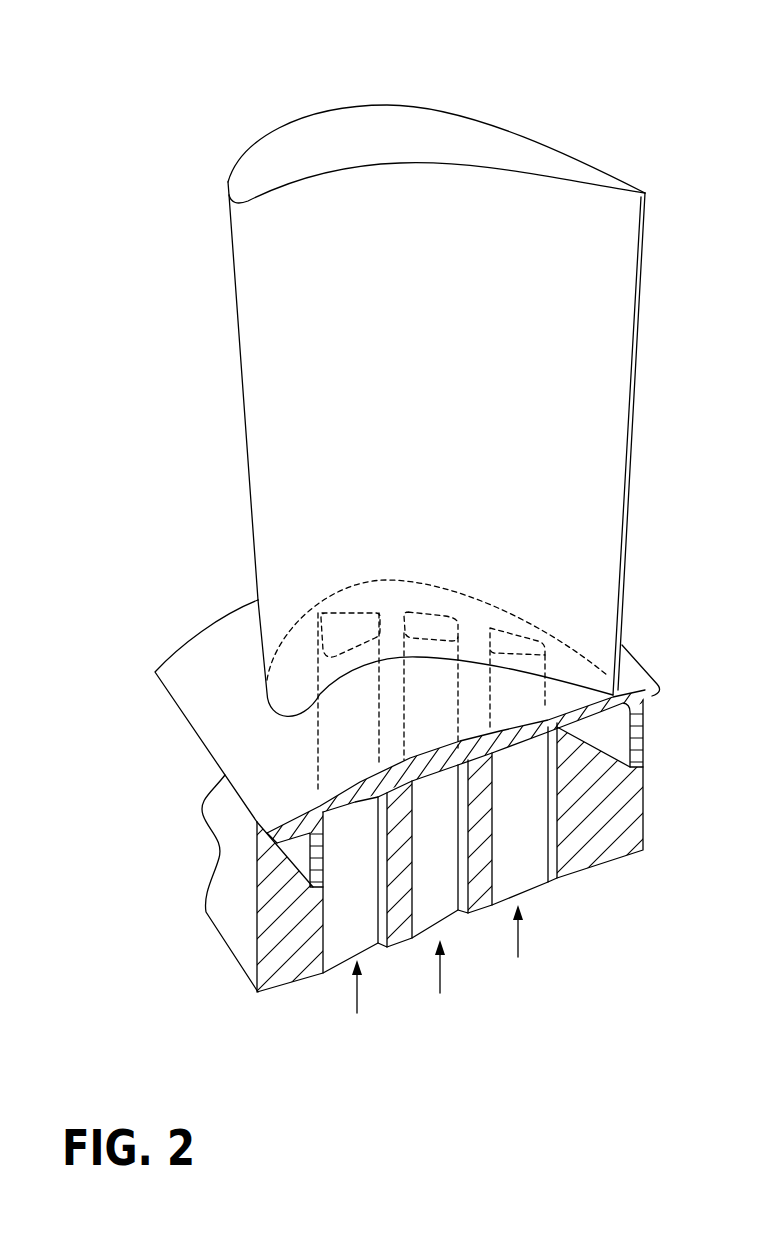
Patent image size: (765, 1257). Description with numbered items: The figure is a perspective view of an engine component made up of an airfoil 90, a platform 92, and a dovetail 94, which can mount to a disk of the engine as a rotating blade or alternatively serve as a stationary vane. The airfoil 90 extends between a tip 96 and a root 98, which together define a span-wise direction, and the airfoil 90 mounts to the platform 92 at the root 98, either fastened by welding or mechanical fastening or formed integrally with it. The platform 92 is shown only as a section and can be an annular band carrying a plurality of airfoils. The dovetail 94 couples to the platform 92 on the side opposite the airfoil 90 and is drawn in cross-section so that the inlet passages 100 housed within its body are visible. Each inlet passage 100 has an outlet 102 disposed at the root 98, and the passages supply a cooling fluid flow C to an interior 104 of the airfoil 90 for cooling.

The airfoil 90 is at (236, 486).
The platform 92 is at (213, 670).
The dovetail 94 is at (245, 873).
The tip 96 is at (322, 145).
The root 98 is at (573, 675).
The inlet passages 100 is at (338, 932).
The outlet 102 is at (340, 613).
The interior 104 is at (519, 141).